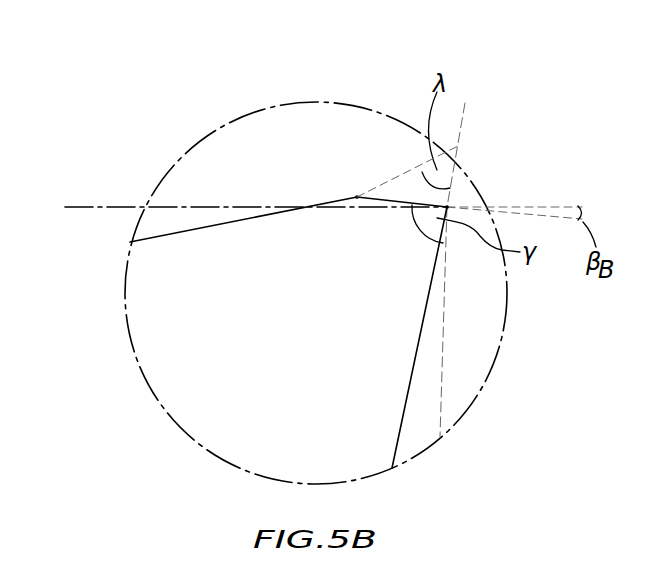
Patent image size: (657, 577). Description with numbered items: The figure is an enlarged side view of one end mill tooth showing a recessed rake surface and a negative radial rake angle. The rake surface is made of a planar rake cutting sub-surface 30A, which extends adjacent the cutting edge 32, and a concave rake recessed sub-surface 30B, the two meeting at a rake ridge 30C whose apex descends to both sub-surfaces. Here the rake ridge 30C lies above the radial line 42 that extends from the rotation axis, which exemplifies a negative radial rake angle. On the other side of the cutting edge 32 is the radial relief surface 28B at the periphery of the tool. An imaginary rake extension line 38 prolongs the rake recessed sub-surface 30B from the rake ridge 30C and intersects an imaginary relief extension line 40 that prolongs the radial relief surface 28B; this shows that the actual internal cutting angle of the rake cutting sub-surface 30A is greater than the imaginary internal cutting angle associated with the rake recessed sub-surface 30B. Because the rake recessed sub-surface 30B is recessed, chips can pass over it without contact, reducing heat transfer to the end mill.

The radial line 42 is at (102, 207).
The rake recessed sub-surface 30B is at (267, 221).
The rake cutting sub-surface 30A is at (400, 202).
The rake ridge 30C is at (357, 195).
The imaginary rake extension line 38 is at (388, 172).
The imaginary relief extension line 40 is at (457, 149).
The cutting edge 32 is at (448, 208).
The radial relief surface 28B is at (413, 377).